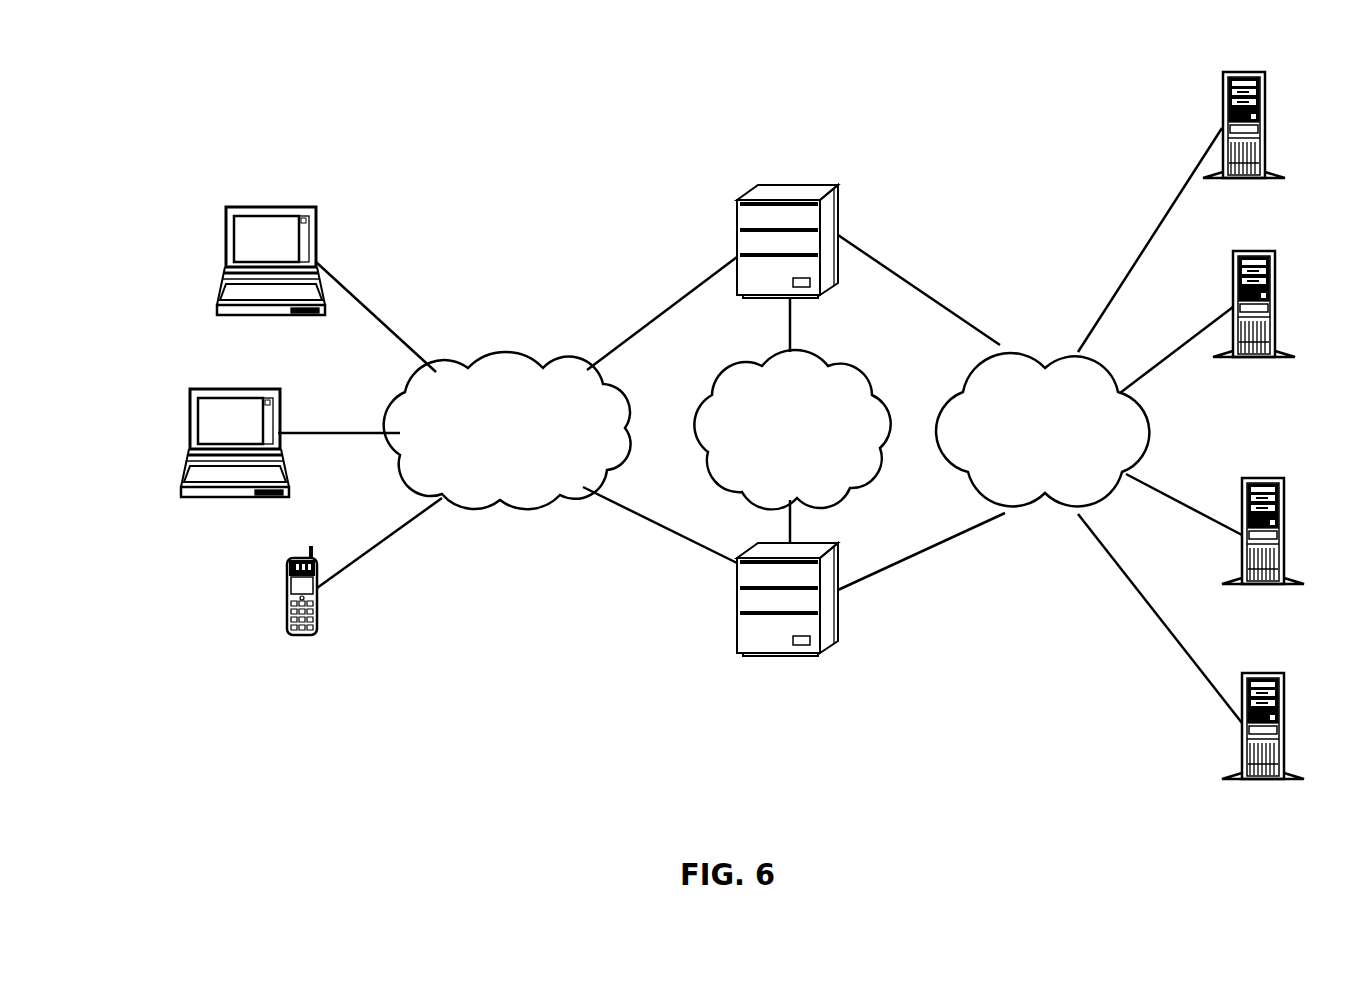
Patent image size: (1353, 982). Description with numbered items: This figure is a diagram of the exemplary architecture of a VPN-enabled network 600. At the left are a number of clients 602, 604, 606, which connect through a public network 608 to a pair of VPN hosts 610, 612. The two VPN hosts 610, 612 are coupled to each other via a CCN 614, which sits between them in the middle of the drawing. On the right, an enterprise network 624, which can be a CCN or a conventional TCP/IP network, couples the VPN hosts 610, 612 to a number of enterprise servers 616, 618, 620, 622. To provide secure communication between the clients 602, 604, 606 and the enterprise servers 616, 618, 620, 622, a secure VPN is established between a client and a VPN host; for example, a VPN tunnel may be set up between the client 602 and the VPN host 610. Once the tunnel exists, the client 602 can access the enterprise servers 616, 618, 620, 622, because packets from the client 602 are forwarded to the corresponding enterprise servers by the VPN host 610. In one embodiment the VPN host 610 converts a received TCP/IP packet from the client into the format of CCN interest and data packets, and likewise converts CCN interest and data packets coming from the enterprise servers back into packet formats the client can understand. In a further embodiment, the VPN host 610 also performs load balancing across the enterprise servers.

The VPN-enabled network 600 is at (637, 776).
The client 602 is at (226, 259).
The client 604 is at (190, 415).
The client 606 is at (287, 588).
The public network 608 is at (507, 430).
The VPN host 610 is at (760, 184).
The VPN host 612 is at (737, 656).
The CCN 614 is at (792, 429).
The enterprise server 616 is at (1262, 90).
The enterprise server 618 is at (1270, 267).
The enterprise server 620 is at (1278, 497).
The enterprise server 622 is at (1280, 690).
The enterprise network 624 is at (1042, 429).